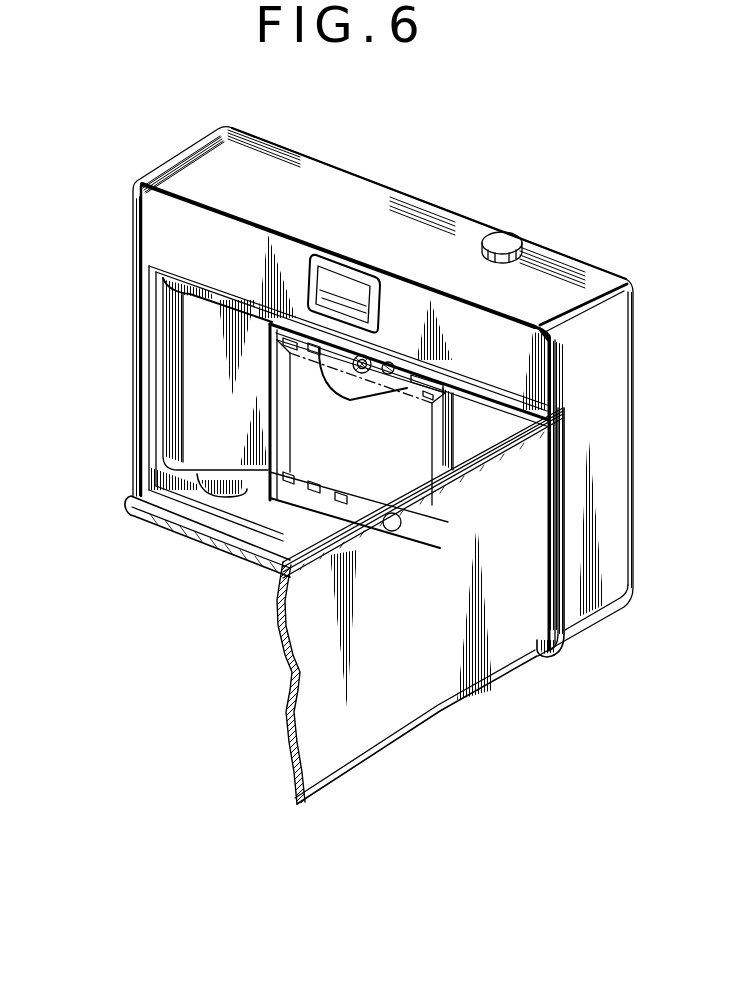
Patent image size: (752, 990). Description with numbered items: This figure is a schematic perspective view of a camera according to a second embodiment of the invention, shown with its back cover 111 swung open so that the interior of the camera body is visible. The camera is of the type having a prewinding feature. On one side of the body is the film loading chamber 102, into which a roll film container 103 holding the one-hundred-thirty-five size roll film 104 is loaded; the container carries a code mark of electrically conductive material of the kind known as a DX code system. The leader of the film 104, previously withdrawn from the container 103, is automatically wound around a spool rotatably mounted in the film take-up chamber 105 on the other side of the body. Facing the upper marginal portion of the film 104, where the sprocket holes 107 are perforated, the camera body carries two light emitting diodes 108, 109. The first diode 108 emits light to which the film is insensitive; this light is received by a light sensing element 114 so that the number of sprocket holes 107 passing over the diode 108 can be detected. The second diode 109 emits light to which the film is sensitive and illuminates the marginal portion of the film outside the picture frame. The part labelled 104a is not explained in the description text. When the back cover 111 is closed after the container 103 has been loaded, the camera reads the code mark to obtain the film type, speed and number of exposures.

The film loading chamber 102 is at (175, 503).
The roll film container 103 is at (176, 405).
The roll film 104 is at (379, 430).
The holder front panel 104a is at (303, 430).
The film take-up chamber 105 is at (462, 432).
The sprocket holes 107 is at (284, 350).
The light emitting diode 108 is at (363, 373).
The light emitting diode 109 is at (389, 363).
The back cover 111 is at (290, 642).
The light sensing element 114 is at (397, 534).